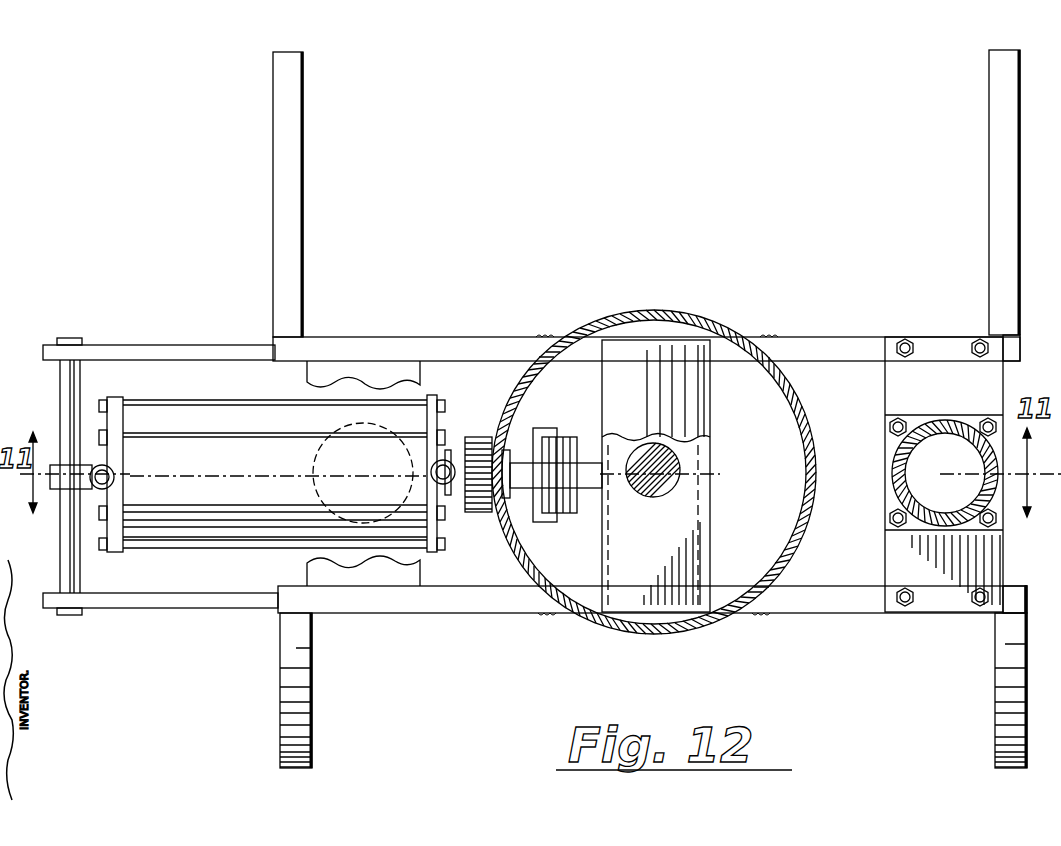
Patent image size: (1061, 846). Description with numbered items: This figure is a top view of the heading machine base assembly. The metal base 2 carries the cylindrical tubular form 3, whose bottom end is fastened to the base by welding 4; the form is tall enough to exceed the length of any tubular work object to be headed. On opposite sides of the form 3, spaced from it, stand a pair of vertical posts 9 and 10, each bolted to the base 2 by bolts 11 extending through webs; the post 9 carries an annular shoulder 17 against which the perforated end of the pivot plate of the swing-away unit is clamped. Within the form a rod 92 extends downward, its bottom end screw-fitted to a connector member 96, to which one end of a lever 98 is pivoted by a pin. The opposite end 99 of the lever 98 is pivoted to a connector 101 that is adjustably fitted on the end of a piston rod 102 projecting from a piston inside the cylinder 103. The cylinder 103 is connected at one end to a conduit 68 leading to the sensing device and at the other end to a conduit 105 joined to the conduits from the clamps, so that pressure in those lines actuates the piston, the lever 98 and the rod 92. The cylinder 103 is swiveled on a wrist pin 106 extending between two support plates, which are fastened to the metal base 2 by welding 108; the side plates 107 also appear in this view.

The metal base 2 is at (850, 337).
The cylindrical tubular form 3 is at (640, 312).
The welding 4 is at (762, 338).
The vertical post 9 is at (940, 420).
The vertical post 10 is at (365, 420).
The bolts 11 is at (890, 516).
The annular shoulder 17 is at (905, 386).
The conduit 68 is at (108, 490).
The rod 92 is at (690, 472).
The connector member 96 is at (680, 548).
The lever 98 is at (590, 484).
The opposite end of lever 99 is at (518, 440).
The connector 101 is at (485, 510).
The piston rod 102 is at (448, 460).
The cylinder 103 is at (212, 520).
The conduit 105 is at (440, 470).
The wrist pin 106 is at (78, 380).
The side bar 107 is at (183, 348).
The welding 108 is at (275, 345).